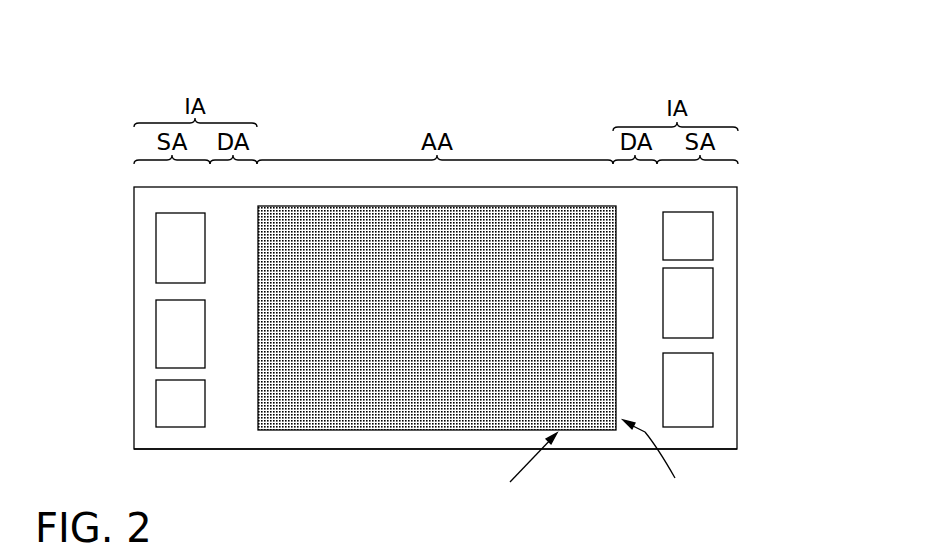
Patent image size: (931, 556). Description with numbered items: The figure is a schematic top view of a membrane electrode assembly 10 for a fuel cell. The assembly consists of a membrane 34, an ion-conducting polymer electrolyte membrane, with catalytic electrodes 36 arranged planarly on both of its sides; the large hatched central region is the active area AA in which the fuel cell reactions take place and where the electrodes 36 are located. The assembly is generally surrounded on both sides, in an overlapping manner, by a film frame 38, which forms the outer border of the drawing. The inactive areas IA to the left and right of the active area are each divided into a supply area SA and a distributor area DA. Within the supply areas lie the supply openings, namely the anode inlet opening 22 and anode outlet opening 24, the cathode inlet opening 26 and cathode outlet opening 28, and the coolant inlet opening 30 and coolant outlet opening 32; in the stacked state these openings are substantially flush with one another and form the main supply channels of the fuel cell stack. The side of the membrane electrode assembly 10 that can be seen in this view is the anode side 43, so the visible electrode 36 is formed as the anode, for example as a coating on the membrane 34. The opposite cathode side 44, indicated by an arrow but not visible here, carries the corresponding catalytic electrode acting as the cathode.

The membrane electrode assembly 10 is at (551, 98).
The anode inlet opening 22 is at (157, 401).
The anode outlet opening 24 is at (712, 233).
The cathode inlet opening 26 is at (157, 246).
The cathode outlet opening 28 is at (712, 389).
The coolant inlet opening 30 is at (157, 334).
The coolant outlet opening 32 is at (712, 303).
The membrane 34 is at (437, 347).
The electrodes 36 is at (382, 415).
The film frame 38 is at (233, 434).
The anode side 43 is at (526, 469).
The cathode side 44 is at (660, 463).